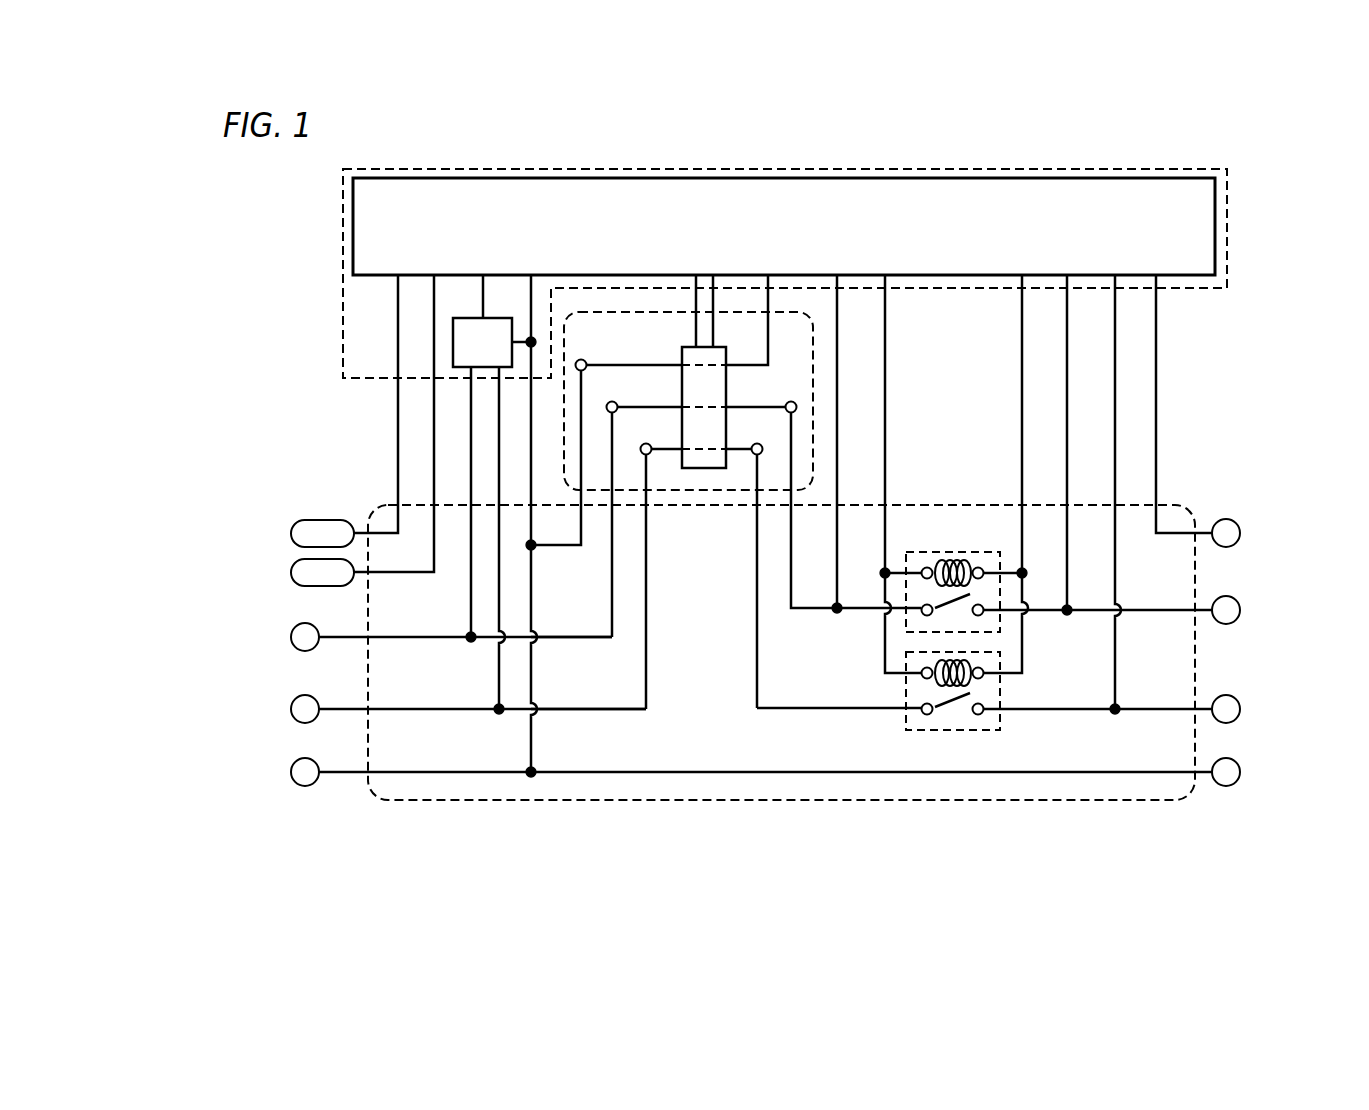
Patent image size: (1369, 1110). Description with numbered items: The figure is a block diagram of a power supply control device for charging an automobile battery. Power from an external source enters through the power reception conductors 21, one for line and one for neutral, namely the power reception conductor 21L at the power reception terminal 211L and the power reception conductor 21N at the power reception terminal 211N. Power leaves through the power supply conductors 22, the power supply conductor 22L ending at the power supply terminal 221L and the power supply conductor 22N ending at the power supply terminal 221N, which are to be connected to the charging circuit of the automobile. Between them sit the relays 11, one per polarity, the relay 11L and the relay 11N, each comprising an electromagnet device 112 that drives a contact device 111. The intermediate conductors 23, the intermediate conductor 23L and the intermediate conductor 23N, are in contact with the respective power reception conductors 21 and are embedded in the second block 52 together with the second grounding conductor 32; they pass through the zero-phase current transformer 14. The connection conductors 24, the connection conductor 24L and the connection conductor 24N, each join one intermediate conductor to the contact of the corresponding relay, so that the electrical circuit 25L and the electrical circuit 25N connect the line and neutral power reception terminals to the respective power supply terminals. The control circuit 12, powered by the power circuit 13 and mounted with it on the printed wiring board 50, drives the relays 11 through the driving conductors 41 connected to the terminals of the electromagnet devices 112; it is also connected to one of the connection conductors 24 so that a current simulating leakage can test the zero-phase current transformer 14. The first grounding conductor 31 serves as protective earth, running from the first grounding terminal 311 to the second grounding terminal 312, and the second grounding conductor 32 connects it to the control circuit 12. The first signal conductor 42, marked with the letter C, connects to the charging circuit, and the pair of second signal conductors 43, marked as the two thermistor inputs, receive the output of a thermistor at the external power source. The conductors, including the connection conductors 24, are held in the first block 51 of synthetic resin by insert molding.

The printed wiring board 50 is at (1227, 169).
The control circuit 12 is at (1193, 232).
The power circuit 13 is at (468, 333).
The second block 52 is at (813, 352).
The zero-phase current transformer 14 is at (727, 420).
The second grounding conductor 32 is at (750, 367).
The intermediate conductors 23 is at (661, 515).
The intermediate conductor 23L is at (624, 405).
The intermediate conductor 23N is at (668, 452).
The first block 51 is at (1128, 800).
The second signal conductors 43 is at (383, 533).
The power reception terminal 211L is at (290, 637).
The power reception terminal 211N is at (290, 709).
The first grounding terminal 311 is at (305, 786).
The power reception conductors 21 is at (482, 695).
The power reception conductor 21L is at (384, 640).
The power reception conductor 21N is at (400, 712).
The electrical circuit 25L is at (576, 648).
The electrical circuit 25N is at (581, 719).
The first grounding conductor 31 is at (708, 770).
The connection conductors 24 is at (839, 585).
The connection conductor 24L is at (808, 610).
The connection conductor 24N is at (800, 710).
The driving conductors 41 is at (1022, 437).
The relays 11 is at (1019, 614).
The relay 11L is at (928, 552).
The relay 11N is at (1000, 722).
The electromagnet device 112 is at (1018, 687).
The contact device 111 is at (945, 738).
The power supply conductors 22 is at (1148, 494).
The power supply conductor 22L is at (1176, 608).
The power supply conductor 22N is at (1176, 707).
The first signal conductor 42 is at (1168, 537).
The power supply terminal 221L is at (1241, 612).
The power supply terminal 221N is at (1241, 711).
The second grounding terminal 312 is at (1228, 787).